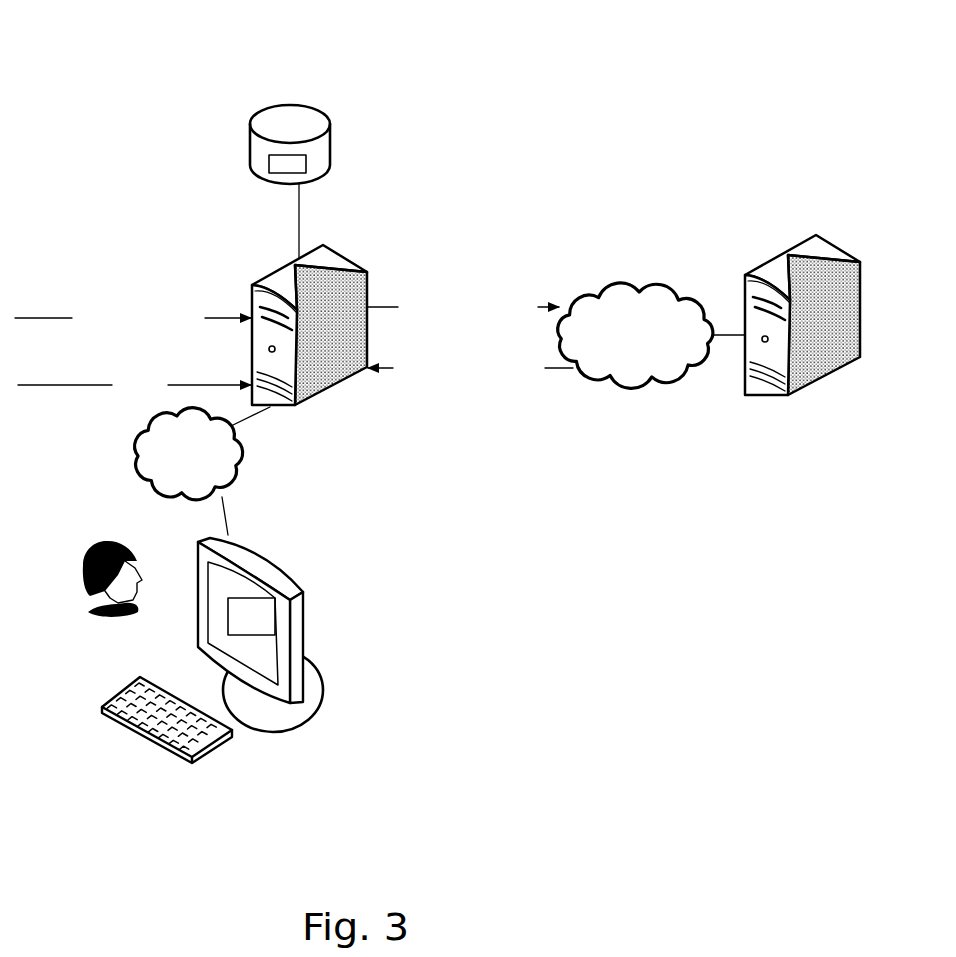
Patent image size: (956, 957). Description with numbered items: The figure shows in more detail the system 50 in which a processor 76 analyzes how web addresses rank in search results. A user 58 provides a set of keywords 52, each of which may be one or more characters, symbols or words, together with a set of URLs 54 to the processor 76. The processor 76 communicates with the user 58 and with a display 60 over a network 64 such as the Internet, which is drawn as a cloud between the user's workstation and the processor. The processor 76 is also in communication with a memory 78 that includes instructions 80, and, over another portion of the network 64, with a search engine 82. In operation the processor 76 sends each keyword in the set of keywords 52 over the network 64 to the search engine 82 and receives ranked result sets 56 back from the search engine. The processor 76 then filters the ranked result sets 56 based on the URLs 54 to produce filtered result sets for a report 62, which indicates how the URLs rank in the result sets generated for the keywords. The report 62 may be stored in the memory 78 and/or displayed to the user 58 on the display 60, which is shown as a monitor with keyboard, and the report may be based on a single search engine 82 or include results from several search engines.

The system 50 is at (303, 35).
The set of keywords 52 is at (153, 308).
The set of URLs 54 is at (145, 397).
The ranked result sets 56 is at (470, 395).
The user 58 is at (115, 625).
The display 60 is at (158, 780).
The report 62 is at (263, 613).
The network 64 is at (235, 462).
The processor 76 is at (300, 407).
The memory 78 is at (258, 157).
The instructions 80 is at (275, 178).
The search engine 82 is at (788, 398).